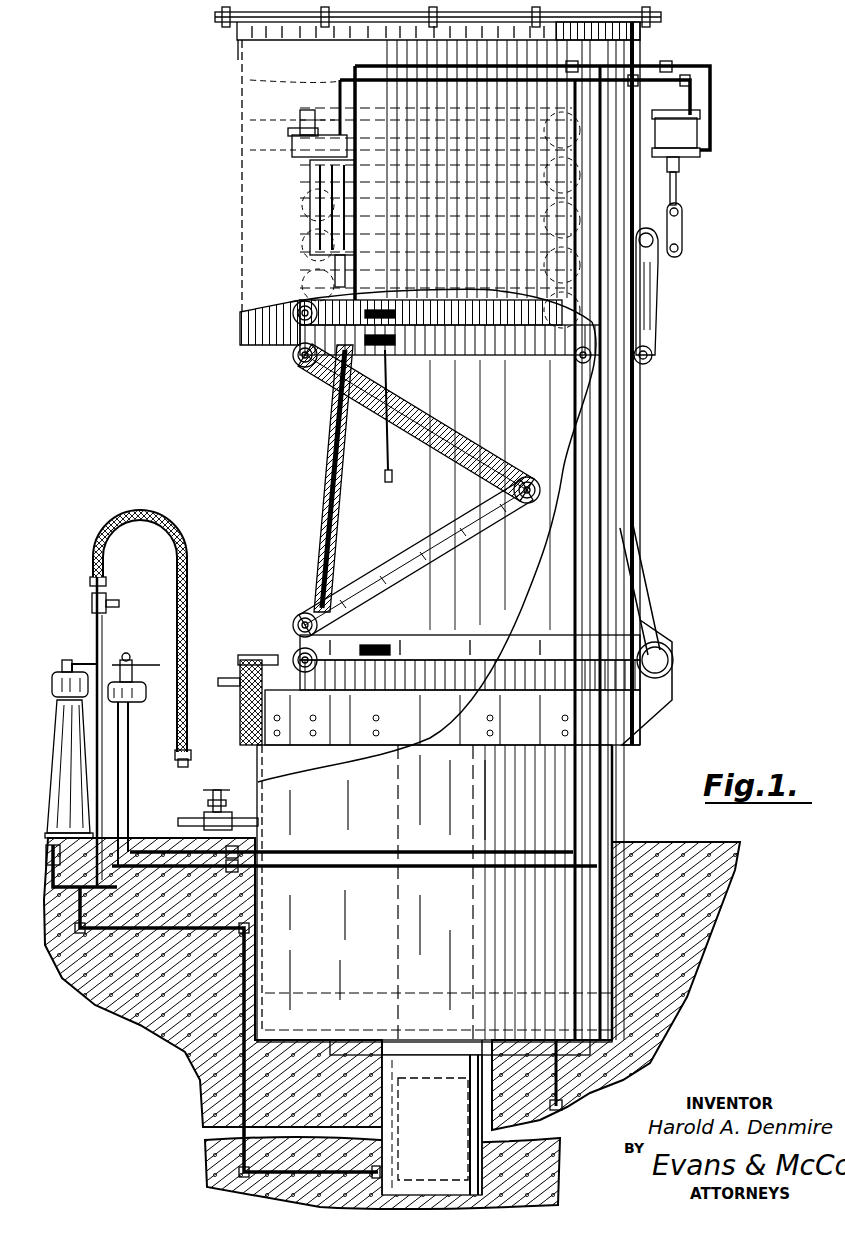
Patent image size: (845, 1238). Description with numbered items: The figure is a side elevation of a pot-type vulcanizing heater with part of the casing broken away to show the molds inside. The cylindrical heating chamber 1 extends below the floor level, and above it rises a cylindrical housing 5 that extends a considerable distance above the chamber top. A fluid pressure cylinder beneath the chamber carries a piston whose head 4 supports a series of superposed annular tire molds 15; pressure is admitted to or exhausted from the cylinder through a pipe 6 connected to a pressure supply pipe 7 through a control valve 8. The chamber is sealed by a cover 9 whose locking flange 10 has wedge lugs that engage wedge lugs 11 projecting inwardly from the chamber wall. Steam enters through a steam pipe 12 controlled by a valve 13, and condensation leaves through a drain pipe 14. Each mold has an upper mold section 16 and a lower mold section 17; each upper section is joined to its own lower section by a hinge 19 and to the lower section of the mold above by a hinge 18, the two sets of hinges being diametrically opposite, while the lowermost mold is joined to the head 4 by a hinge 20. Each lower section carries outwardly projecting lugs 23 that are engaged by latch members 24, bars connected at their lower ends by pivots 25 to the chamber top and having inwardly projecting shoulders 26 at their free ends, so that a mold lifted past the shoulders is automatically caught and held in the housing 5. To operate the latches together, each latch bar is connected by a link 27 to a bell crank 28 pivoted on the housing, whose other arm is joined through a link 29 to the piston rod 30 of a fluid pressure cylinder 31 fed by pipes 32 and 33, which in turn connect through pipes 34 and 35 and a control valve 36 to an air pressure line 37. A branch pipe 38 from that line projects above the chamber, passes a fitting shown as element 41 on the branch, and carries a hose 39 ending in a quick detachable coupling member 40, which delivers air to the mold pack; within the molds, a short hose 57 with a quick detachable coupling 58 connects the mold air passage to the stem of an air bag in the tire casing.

The heating chamber 1 is at (620, 797).
The head 4 is at (258, 275).
The cylindrical housing 5 is at (645, 52).
The pipe 6 is at (195, 1072).
The pressure supply pipe 7 is at (55, 830).
The control valve 8 is at (62, 674).
The cover 9 is at (318, 108).
The locking flange 10 is at (282, 132).
The wedge lugs 11 is at (245, 662).
The steam pipe 12 is at (185, 818).
The valve 13 is at (219, 790).
The drain pipe 14 is at (560, 1110).
The annular tire molds 15 is at (242, 332).
The upper mold section 16 is at (345, 400).
The lower mold section 17 is at (395, 562).
The hinge 18 is at (532, 505).
The hinge 19 is at (295, 362).
The hinge 20 is at (298, 655).
The lugs 23 is at (393, 310).
The latch members 24 is at (330, 512).
The pivots 25 is at (672, 660).
The shoulders 26 is at (560, 400).
The link 27 is at (592, 362).
The bell crank 28 is at (658, 295).
The link 29 is at (683, 228).
The piston rod 30 is at (680, 190).
The fluid pressure cylinder 31 is at (700, 140).
The pipe 32 is at (655, 66).
The pipe 33 is at (712, 72).
The pipe 34 is at (600, 455).
The pipe 35 is at (580, 520).
The control valve 36 is at (138, 692).
The air pressure line 37 is at (62, 975).
The branch pipe 38 is at (104, 640).
The hose 39 is at (188, 572).
The quick detachable coupling member 40 is at (179, 756).
The valve 41 is at (90, 605).
The hose 57 is at (389, 440).
The quick detachable coupling 58 is at (390, 478).